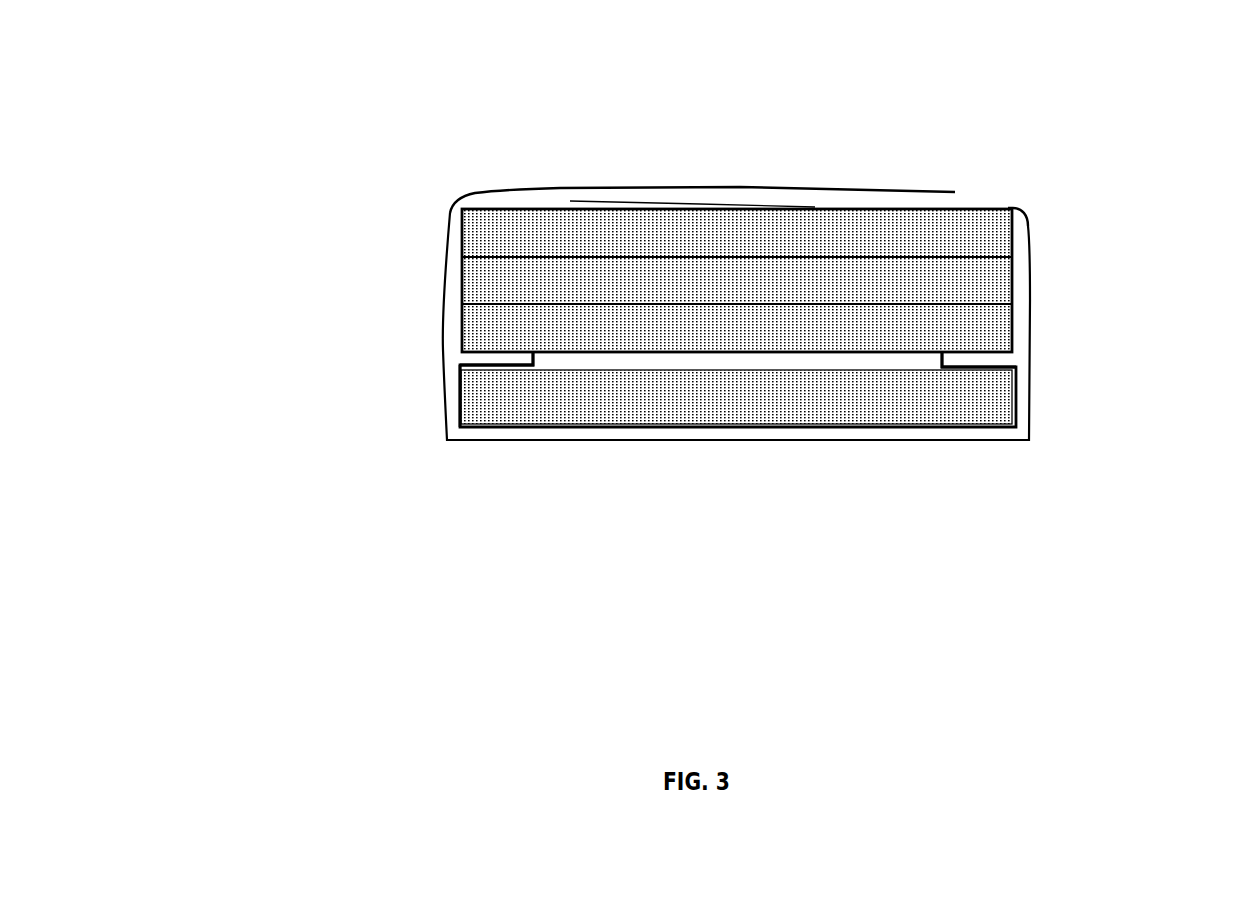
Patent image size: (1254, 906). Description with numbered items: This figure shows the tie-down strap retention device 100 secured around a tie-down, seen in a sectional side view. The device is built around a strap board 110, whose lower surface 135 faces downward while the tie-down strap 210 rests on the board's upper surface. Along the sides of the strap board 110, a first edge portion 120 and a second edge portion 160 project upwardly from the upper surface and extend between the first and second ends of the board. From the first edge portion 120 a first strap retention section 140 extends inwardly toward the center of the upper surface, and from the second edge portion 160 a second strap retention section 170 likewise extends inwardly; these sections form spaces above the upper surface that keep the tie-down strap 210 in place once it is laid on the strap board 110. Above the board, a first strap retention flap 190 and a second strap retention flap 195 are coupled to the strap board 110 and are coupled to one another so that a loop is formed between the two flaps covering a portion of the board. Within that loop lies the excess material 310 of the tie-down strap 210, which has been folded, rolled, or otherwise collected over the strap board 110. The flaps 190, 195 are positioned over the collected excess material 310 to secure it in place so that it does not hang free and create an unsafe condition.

The tie-down strap retention device 100 is at (321, 163).
The strap board 110 is at (563, 435).
The first edge portion 120 is at (1020, 405).
The lower surface 135 is at (612, 445).
The first strap retention section 140 is at (987, 358).
The second edge portion 160 is at (452, 402).
The second strap retention section 170 is at (478, 358).
The first strap retention flap 190 is at (557, 190).
The second strap retention flap 195 is at (1020, 205).
The tie-down strap 210 is at (863, 393).
The excess material 310 is at (802, 228).